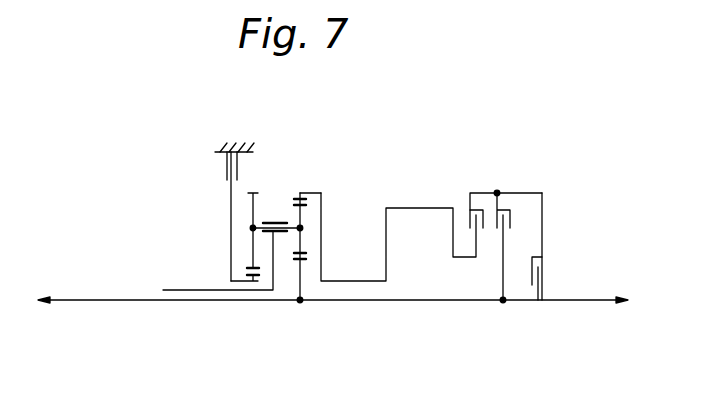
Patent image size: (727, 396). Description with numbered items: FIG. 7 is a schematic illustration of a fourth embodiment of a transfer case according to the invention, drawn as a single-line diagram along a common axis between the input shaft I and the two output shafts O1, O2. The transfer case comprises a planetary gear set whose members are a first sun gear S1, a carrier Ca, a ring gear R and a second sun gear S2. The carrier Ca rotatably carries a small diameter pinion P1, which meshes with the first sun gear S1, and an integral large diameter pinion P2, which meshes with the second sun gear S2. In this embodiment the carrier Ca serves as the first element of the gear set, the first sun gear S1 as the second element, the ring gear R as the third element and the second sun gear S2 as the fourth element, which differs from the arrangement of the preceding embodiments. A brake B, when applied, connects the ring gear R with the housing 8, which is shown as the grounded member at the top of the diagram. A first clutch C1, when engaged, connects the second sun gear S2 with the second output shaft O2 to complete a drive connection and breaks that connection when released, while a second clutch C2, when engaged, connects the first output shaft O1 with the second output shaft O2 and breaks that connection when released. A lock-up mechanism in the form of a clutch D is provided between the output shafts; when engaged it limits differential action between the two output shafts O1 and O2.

The housing 8 is at (235, 151).
The brake B is at (223, 165).
The large diameter pinion P2 is at (257, 206).
The carrier Ca is at (278, 221).
The small diameter pinion P1 is at (296, 197).
The ring gear R is at (322, 202).
The first clutch C1 is at (463, 203).
The second clutch C2 is at (515, 212).
The lock-up clutch D is at (548, 277).
The input shaft I is at (183, 289).
The first output shaft O1 is at (69, 300).
The second output shaft O2 is at (596, 300).
The first sun gear S1 is at (300, 280).
The second sun gear S2 is at (257, 283).